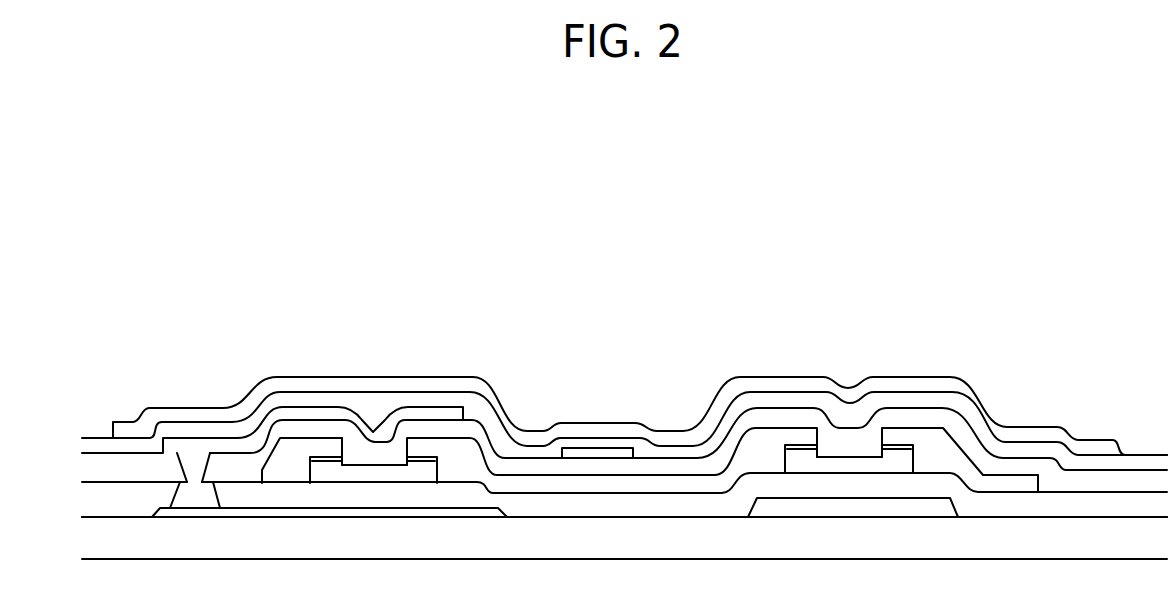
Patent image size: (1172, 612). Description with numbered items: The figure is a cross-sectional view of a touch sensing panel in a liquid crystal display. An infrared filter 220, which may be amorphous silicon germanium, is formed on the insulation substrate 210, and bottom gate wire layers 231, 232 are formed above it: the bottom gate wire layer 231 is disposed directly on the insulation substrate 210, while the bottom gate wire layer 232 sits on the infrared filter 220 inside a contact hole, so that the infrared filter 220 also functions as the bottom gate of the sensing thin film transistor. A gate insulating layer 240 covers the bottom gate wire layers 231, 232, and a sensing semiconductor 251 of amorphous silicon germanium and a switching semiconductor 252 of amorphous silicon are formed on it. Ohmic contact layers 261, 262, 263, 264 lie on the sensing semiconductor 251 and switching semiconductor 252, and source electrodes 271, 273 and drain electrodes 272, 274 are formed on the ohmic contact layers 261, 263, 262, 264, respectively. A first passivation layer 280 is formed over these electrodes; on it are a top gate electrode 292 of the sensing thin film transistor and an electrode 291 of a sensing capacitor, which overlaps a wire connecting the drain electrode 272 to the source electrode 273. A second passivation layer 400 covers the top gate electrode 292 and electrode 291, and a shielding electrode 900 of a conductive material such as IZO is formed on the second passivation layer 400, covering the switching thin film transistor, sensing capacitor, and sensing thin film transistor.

The insulation substrate 210 is at (522, 540).
The infrared filter 220 is at (382, 510).
The bottom gate wire layer 231 is at (850, 500).
The bottom gate wire layer 232 is at (190, 507).
The gate insulating layer 240 is at (640, 512).
The sensing semiconductor 251 is at (373, 472).
The switching semiconductor 252 is at (850, 462).
The ohmic contact layer 261 is at (327, 457).
The ohmic contact layer 262 is at (420, 458).
The ohmic contact layer 263 is at (800, 447).
The ohmic contact layer 264 is at (896, 447).
The source electrode 271 is at (287, 457).
The drain electrode 272 is at (462, 458).
The source electrode 273 is at (762, 447).
The drain electrode 274 is at (937, 448).
The first passivation layer 280 is at (680, 468).
The electrode of sensing capacitor 291 is at (587, 452).
The top gate electrode 292 is at (452, 413).
The second passivation layer 400 is at (972, 413).
The shielding electrode 900 is at (1055, 432).